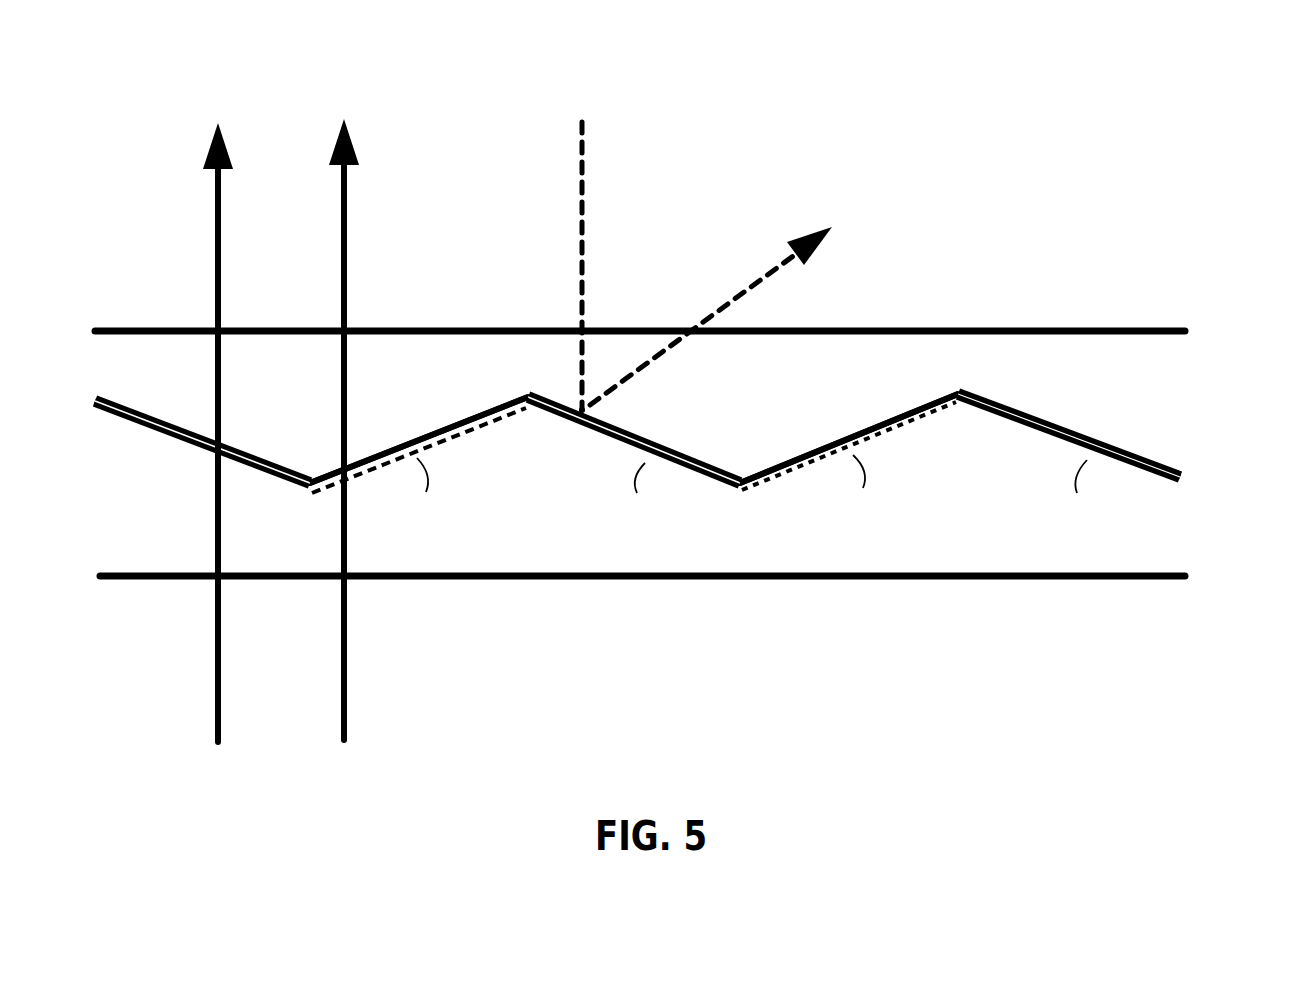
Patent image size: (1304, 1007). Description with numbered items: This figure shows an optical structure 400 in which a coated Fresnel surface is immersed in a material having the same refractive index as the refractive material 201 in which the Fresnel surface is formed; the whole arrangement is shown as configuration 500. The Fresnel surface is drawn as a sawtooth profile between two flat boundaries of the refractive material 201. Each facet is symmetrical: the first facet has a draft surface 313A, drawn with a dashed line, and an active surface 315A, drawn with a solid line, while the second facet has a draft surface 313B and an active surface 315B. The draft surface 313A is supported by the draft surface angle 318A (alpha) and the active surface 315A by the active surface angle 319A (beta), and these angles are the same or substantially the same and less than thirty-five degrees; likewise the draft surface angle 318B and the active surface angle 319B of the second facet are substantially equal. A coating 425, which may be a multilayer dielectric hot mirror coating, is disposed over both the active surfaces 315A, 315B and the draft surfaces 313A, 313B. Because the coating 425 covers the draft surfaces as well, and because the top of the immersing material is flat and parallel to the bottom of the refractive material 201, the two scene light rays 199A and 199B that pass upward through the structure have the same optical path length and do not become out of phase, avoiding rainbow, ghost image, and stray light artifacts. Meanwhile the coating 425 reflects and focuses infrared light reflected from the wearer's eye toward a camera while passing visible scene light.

The light guide configuration 500 is at (1143, 66).
The refractive material 201 is at (188, 486).
The optical structure 400 is at (1210, 430).
The coating 425 is at (1035, 415).
The draft surface 313A is at (368, 473).
The draft surface 313B is at (787, 468).
The active surface 315A is at (696, 478).
The active surface 315B is at (1130, 473).
The draft surface angle 318A is at (437, 473).
The draft surface angle 318B is at (877, 477).
The active surface angle 319A is at (627, 473).
The active surface angle 319B is at (1070, 467).
The scene light ray 199A is at (219, 450).
The scene light ray 199B is at (341, 445).